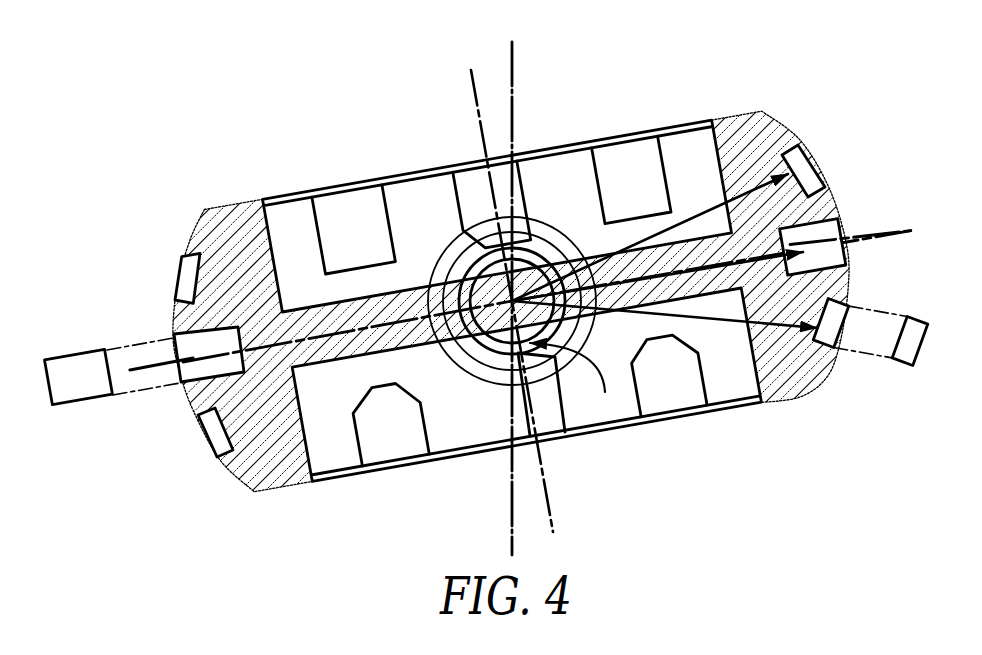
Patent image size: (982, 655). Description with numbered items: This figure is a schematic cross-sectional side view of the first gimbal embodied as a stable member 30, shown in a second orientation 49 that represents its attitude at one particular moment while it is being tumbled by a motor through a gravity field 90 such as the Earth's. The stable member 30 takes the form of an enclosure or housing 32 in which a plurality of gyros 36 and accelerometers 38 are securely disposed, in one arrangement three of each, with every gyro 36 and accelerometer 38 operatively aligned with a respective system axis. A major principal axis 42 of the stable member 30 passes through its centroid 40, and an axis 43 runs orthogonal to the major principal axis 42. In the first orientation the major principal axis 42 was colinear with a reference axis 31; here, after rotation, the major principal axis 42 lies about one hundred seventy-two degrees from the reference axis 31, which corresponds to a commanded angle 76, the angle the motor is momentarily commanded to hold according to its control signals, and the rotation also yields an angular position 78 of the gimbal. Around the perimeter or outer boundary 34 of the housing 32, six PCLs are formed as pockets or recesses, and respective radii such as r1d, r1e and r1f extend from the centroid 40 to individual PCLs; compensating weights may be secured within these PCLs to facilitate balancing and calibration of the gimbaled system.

The stable member 30 is at (468, 258).
The second orientation 49 is at (222, 90).
The reference axis 31 is at (514, 58).
The housing 32 is at (798, 363).
The outer boundary 34 is at (225, 470).
The gyro 36 is at (478, 188).
The accelerometer 38 is at (347, 222).
The centroid 40 is at (465, 380).
The major principal axis 42 is at (548, 507).
The axis 43 is at (162, 362).
The commanded angle 76 is at (574, 381).
The angular position 78 is at (940, 51).
The gravity field 90 is at (225, 171).
The radius r1d is at (697, 213).
The radius r1e is at (748, 260).
The radius r1f is at (775, 330).